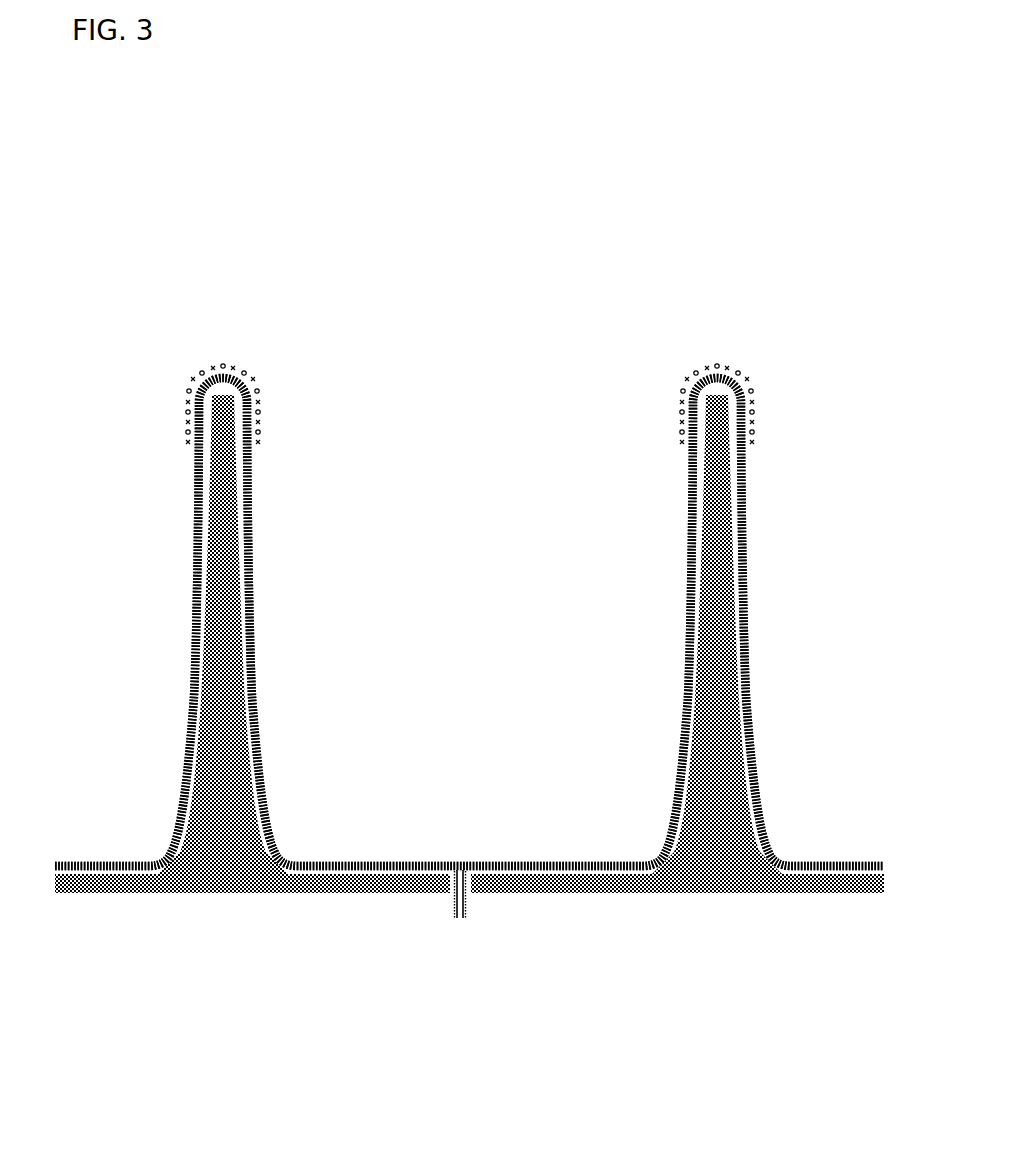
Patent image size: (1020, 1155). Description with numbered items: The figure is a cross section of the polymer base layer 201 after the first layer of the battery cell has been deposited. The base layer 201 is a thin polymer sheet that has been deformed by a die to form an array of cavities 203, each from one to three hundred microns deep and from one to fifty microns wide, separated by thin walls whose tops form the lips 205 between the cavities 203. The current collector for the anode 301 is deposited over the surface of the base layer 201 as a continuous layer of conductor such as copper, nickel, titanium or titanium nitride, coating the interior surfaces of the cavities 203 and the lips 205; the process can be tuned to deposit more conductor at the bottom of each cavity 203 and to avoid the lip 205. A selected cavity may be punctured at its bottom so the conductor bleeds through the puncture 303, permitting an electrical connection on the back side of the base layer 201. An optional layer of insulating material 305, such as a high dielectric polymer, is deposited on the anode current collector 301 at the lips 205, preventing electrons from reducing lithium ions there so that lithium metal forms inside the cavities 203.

The polymer base layer 201 is at (278, 882).
The cavity 203 is at (466, 325).
The lip 205 is at (717, 407).
The current collector for the anode 301 is at (312, 866).
The puncture 303 is at (473, 900).
The insulating material layer 305 is at (200, 397).